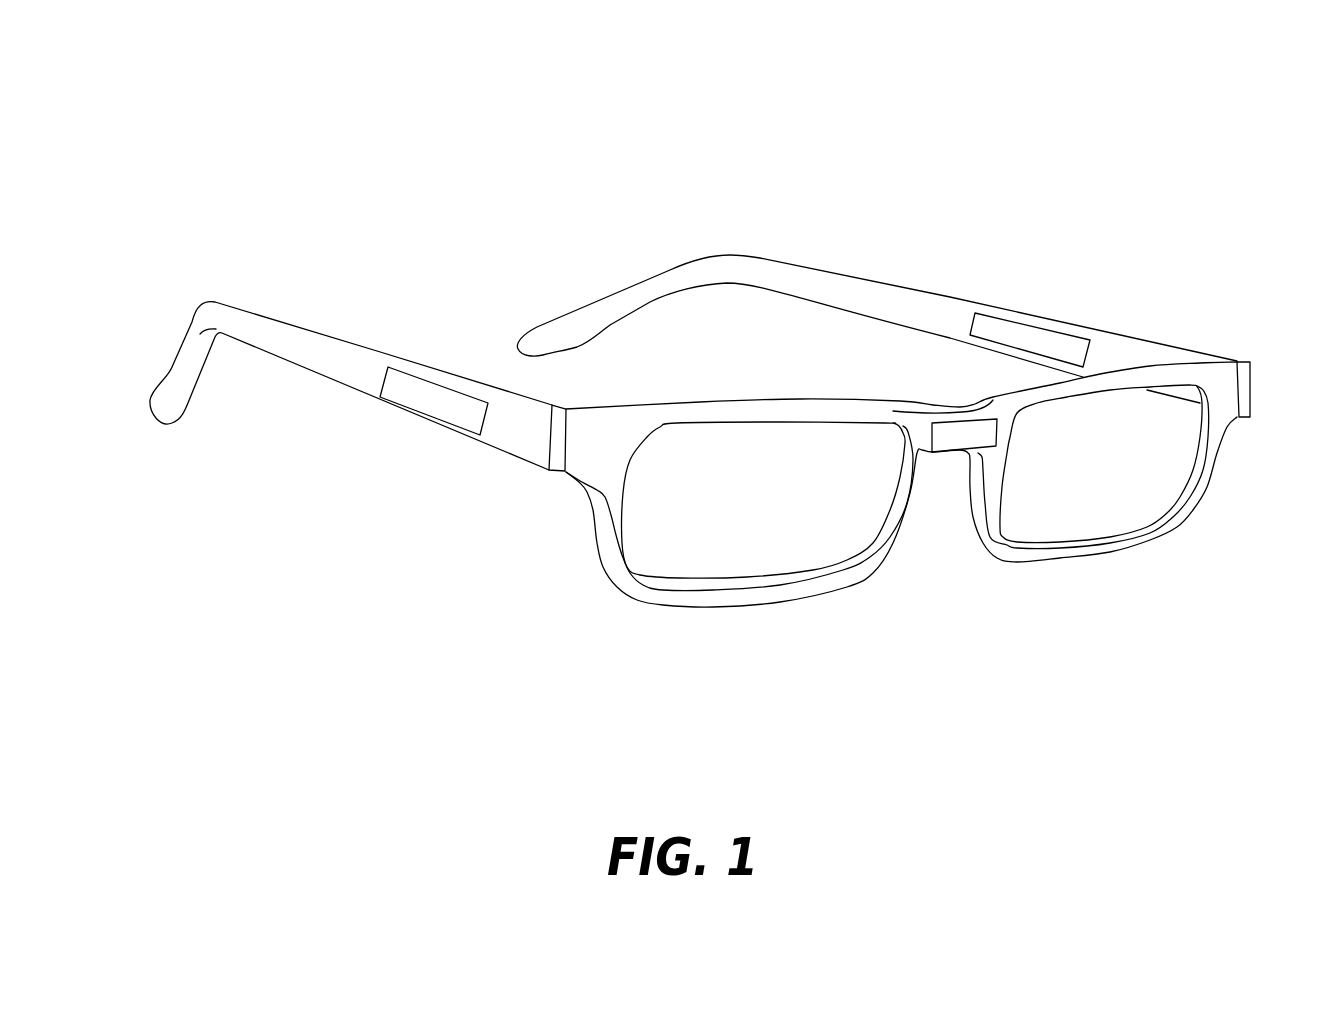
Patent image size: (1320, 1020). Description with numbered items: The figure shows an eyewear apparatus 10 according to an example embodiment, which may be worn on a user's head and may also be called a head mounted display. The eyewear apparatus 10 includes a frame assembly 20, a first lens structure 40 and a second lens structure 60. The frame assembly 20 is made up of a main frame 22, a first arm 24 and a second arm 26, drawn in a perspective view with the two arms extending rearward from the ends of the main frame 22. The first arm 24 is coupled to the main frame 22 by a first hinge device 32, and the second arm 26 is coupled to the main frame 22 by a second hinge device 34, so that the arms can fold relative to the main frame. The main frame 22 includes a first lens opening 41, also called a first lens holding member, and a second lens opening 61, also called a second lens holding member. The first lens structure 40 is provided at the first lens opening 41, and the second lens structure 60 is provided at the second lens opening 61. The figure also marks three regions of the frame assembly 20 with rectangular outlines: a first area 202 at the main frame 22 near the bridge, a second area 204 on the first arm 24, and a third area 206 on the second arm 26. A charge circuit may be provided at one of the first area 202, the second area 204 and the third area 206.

The eyewear apparatus 10 is at (528, 112).
The frame assembly 20 is at (550, 593).
The main frame 22 is at (702, 402).
The first arm 24 is at (325, 332).
The second arm 26 is at (910, 287).
The first hinge device 32 is at (562, 410).
The second hinge device 34 is at (1247, 358).
The first lens structure 40 is at (760, 558).
The first lens opening 41 is at (681, 573).
The second lens structure 60 is at (1080, 520).
The second lens opening 61 is at (1163, 497).
The first area 202 is at (942, 425).
The second area 204 is at (414, 412).
The third area 206 is at (1032, 318).